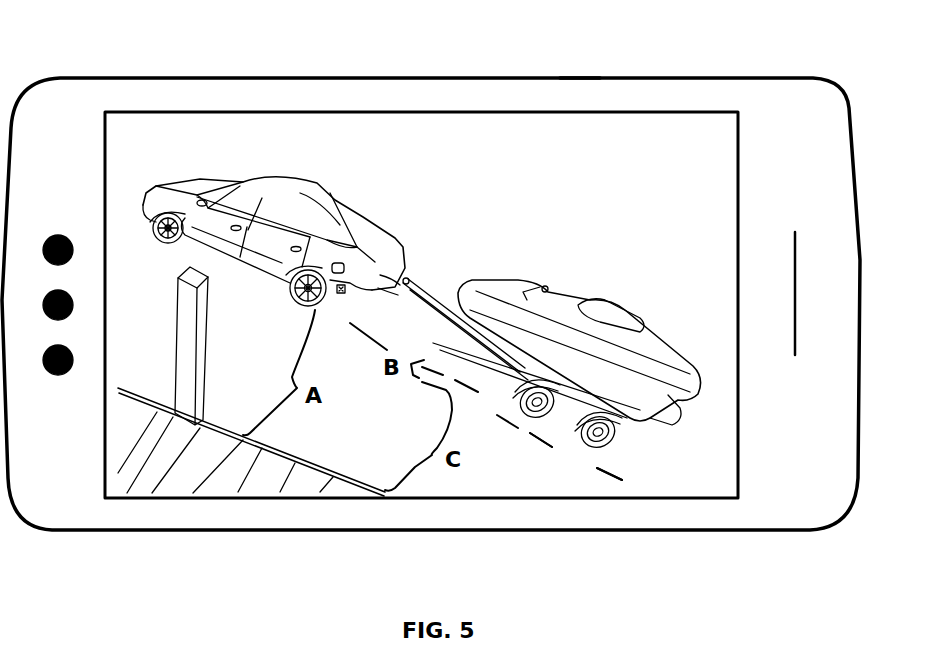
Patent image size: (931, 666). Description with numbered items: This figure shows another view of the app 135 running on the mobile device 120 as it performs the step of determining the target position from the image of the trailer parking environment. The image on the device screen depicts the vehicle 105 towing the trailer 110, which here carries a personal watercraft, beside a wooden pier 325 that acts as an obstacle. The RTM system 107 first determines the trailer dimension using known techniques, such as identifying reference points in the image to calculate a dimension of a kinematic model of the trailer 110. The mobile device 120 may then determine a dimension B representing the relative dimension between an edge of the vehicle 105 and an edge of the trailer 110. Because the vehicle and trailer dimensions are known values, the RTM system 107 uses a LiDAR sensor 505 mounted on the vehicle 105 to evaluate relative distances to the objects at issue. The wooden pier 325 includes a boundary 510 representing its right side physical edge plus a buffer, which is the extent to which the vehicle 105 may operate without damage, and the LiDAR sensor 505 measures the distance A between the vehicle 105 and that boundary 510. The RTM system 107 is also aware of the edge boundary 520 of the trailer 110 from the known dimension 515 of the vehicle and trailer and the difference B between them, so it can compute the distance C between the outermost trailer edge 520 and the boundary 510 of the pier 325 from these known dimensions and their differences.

The RTM system 107 is at (845, 83).
The mobile device 120 is at (723, 78).
The app 135 is at (578, 60).
The vehicle 105 is at (383, 230).
The trailer 110 is at (410, 280).
The wooden pier 325 is at (172, 410).
The LiDAR sensor 505 is at (341, 294).
The boundary 510 is at (263, 442).
The known dimension 515 is at (469, 392).
The edge boundary of the trailer 520 is at (567, 452).